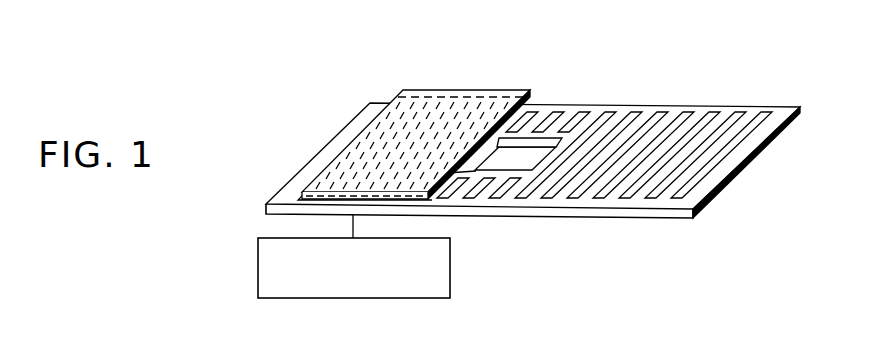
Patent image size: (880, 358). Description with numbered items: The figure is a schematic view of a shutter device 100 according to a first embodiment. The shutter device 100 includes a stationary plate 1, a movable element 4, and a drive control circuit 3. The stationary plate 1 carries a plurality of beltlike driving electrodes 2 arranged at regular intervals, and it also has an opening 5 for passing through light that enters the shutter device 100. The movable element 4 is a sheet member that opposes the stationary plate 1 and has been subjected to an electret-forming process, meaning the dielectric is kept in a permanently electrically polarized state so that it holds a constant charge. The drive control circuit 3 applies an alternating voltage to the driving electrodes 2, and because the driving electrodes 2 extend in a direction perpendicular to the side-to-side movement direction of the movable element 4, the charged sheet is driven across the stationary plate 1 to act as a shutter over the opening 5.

The stationary plate 1 is at (715, 107).
The driving electrodes 2 is at (768, 116).
The drive control circuit 3 is at (258, 265).
The movable element 4 is at (462, 95).
The opening 5 is at (523, 152).
The shutter device 100 is at (573, 164).